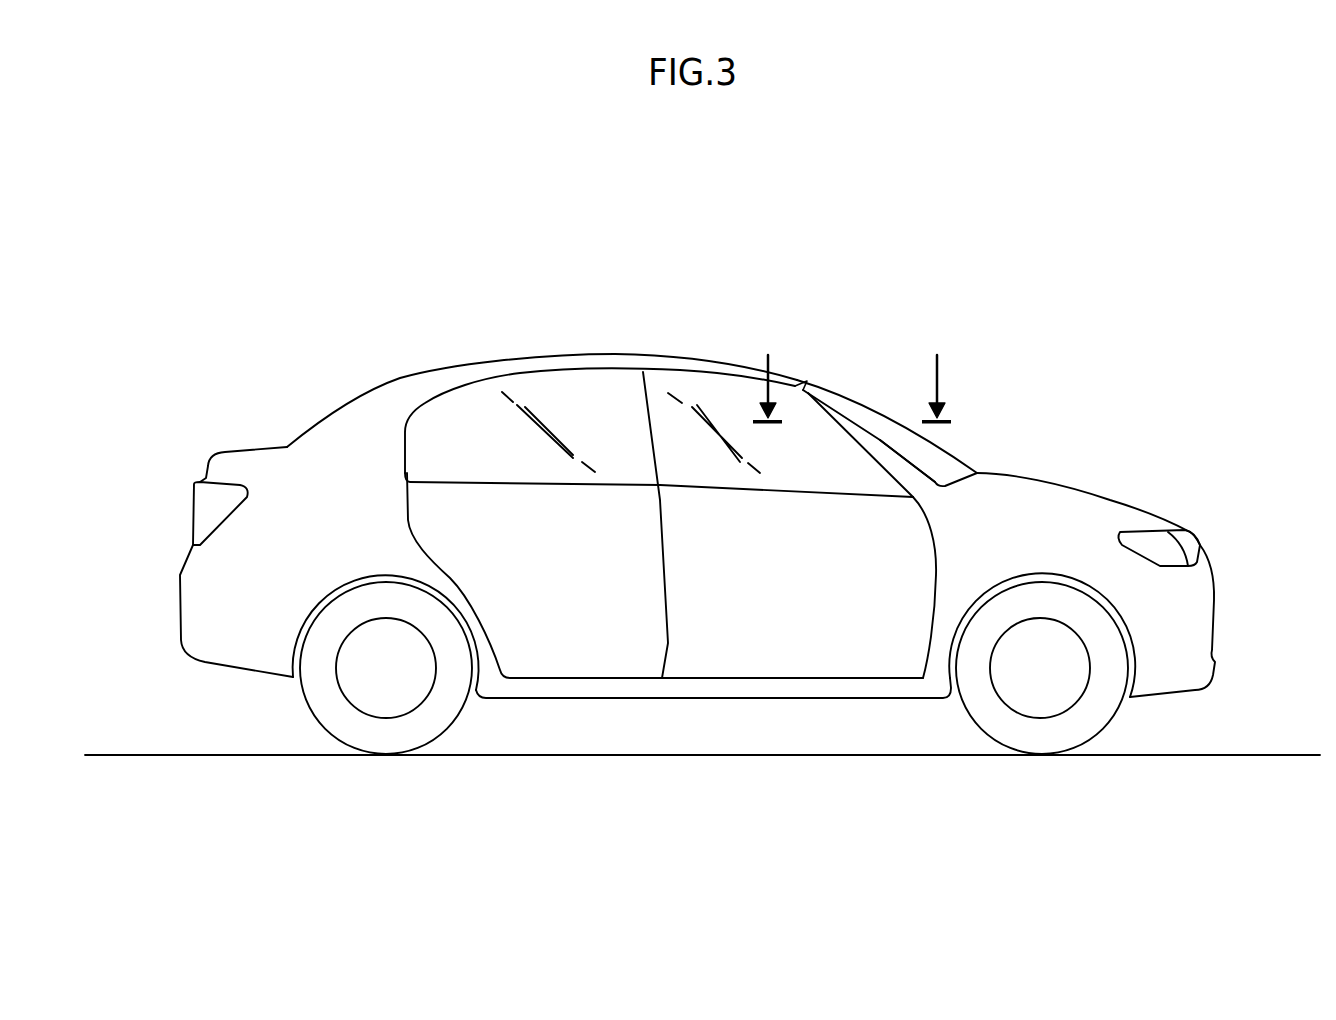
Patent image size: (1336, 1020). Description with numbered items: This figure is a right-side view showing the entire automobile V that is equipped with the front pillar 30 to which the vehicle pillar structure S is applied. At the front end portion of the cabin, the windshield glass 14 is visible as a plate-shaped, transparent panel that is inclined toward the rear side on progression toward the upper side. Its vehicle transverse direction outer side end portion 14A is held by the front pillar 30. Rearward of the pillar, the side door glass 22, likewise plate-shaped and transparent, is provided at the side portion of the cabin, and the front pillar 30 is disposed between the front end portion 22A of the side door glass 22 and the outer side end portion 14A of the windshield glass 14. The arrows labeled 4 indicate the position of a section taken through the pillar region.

The vehicle V is at (532, 283).
The windshield glass 14 is at (843, 393).
The vehicle transverse direction outer side end portion of the WS glass 14A is at (878, 405).
The side door glass 22 is at (707, 390).
The front end portion of the side door glass 22A is at (868, 447).
The front pillar 30 is at (905, 462).
The vehicle pillar structure S is at (898, 358).
The section line of FIG. 4 is at (852, 372).